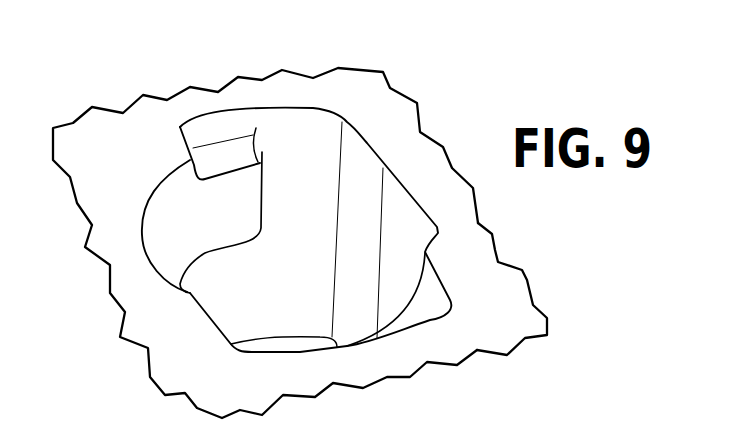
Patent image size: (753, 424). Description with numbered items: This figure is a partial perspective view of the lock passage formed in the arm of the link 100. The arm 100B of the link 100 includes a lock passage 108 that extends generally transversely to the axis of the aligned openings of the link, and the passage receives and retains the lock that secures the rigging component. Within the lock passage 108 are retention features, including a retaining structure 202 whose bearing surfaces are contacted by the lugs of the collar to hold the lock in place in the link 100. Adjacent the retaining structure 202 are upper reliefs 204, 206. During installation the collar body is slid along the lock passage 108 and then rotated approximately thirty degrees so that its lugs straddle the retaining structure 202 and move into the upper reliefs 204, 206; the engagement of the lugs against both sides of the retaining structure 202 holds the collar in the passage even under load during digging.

The link 100 is at (150, 78).
The arm 100B is at (466, 245).
The lock passage 108 is at (307, 108).
The retaining structure 202 is at (188, 215).
The upper relief 204 is at (245, 152).
The upper relief 206 is at (243, 302).